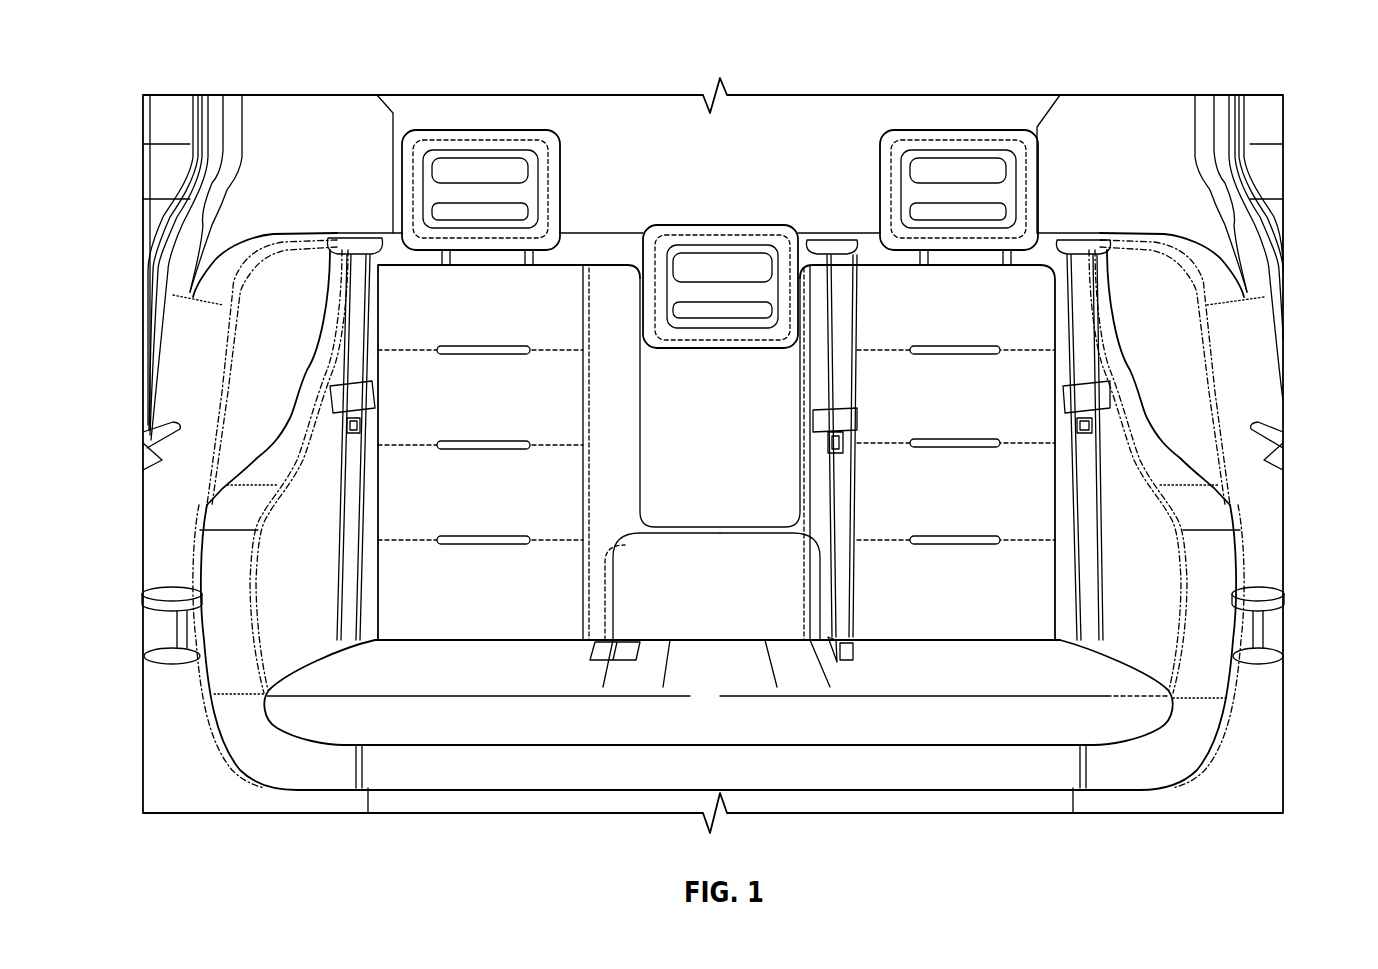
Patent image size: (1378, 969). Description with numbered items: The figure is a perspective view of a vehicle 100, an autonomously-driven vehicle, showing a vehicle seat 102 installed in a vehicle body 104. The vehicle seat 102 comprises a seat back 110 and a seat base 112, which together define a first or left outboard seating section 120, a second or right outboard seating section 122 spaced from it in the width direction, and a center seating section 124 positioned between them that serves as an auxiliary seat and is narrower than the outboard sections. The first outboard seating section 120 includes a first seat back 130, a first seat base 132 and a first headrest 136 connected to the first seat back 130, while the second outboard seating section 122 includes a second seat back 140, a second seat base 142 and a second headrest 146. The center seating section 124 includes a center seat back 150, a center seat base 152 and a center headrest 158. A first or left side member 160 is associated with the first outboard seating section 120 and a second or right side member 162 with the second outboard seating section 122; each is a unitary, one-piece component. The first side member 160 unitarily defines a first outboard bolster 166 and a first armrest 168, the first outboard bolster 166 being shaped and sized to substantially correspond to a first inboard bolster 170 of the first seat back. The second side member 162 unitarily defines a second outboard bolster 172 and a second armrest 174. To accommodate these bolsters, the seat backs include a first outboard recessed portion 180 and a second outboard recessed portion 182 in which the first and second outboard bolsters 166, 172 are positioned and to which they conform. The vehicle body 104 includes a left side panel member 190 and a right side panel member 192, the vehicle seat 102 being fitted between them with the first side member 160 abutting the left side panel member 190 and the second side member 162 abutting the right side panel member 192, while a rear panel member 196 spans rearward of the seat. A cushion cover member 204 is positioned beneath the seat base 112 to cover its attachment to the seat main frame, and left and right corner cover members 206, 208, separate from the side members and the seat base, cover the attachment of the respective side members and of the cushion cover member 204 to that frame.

The vehicle 100 is at (1115, 122).
The vehicle seat 102 is at (633, 118).
The vehicle body 104 is at (305, 115).
The seat back 110 is at (553, 630).
The seat base 112 is at (900, 660).
The first outboard seating section 120 is at (438, 665).
The second outboard seating section 122 is at (1050, 665).
The center seating section 124 is at (683, 657).
The first seat back 130 is at (573, 290).
The first seat base 132 is at (493, 665).
The first headrest 136 is at (482, 130).
The second seat back 140 is at (1020, 283).
The second seat base 142 is at (928, 660).
The second headrest 146 is at (967, 130).
The center seat back 150 is at (753, 487).
The center seat base 152 is at (743, 657).
The center headrest 158 is at (725, 230).
The first side member 160 is at (297, 562).
The second side member 162 is at (1140, 560).
The first outboard bolster 166 is at (380, 332).
The first armrest 168 is at (297, 607).
The first inboard bolster 170 is at (615, 422).
The second outboard bolster 172 is at (1057, 357).
The second armrest 174 is at (1133, 520).
The first outboard recessed portion 180 is at (393, 413).
The second outboard recessed portion 182 is at (1050, 418).
The left side panel member 190 is at (263, 377).
The right side panel member 192 is at (1183, 347).
The rear panel member 196 is at (788, 115).
The cushion cover member 204 is at (707, 767).
The left corner cover member 206 is at (237, 743).
The right corner cover member 208 is at (1188, 740).